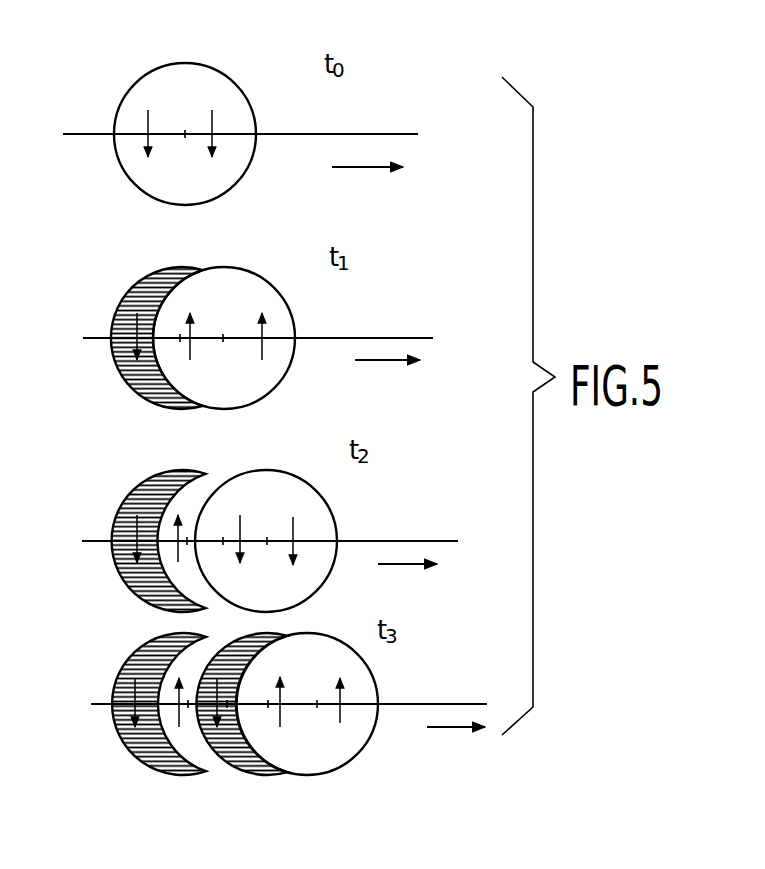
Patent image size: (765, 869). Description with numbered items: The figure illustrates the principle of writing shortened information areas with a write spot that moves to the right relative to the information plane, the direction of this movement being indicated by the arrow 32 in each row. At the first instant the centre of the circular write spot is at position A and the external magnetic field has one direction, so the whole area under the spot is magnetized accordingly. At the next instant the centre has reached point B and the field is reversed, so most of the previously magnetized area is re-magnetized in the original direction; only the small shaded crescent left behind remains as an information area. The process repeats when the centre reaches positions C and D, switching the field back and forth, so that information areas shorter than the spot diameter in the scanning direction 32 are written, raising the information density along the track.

The direction of wafer transport 32 is at (364, 168).